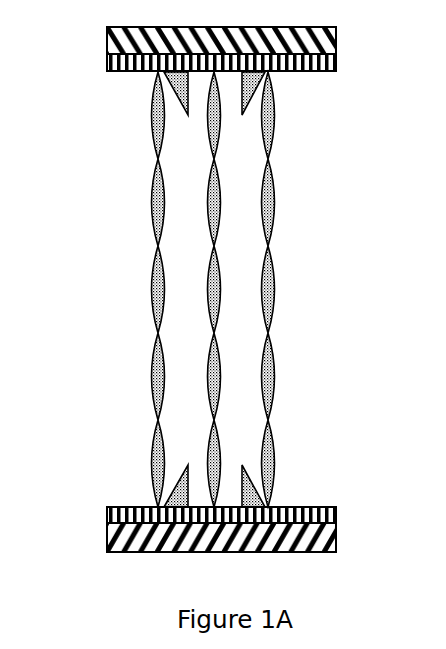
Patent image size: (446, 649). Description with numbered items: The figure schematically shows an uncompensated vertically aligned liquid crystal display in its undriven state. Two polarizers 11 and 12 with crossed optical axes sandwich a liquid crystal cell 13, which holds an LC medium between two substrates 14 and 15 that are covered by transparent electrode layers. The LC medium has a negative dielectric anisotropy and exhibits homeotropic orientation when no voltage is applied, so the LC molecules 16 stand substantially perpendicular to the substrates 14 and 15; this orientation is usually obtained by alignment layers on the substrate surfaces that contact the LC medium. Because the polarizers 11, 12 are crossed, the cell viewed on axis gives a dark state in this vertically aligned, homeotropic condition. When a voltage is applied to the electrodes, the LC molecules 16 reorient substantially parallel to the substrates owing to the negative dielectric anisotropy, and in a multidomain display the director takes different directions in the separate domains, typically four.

The polarizer 11 is at (191, 39).
The polarizer 12 is at (191, 543).
The liquid crystal cell 13 is at (229, 289).
The substrate 14 is at (191, 65).
The substrate 15 is at (191, 519).
The LC molecules 16 is at (289, 283).